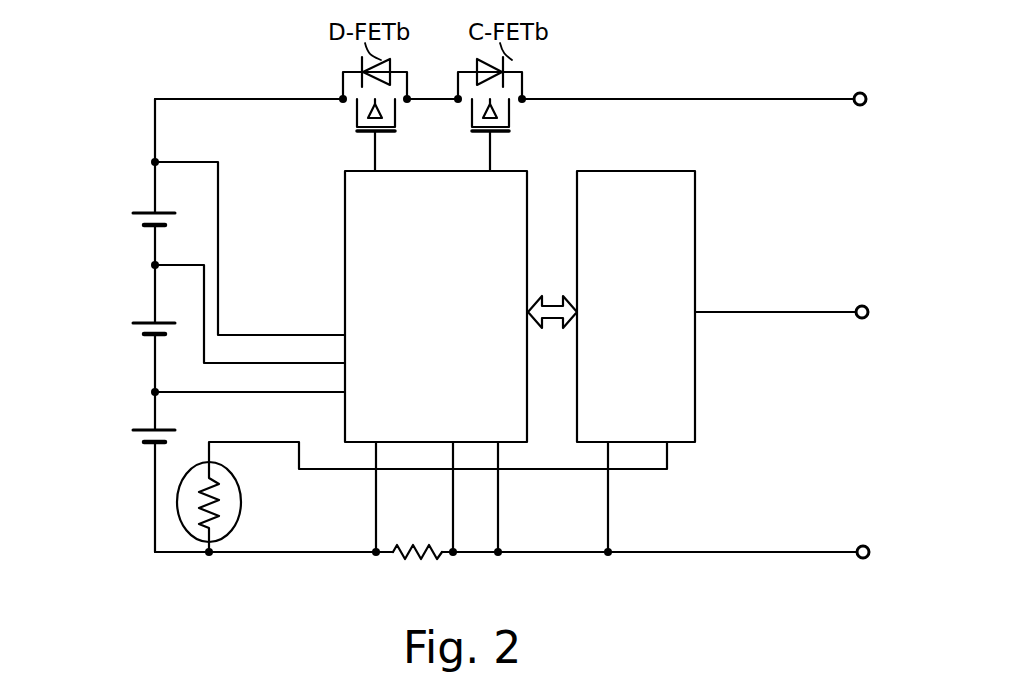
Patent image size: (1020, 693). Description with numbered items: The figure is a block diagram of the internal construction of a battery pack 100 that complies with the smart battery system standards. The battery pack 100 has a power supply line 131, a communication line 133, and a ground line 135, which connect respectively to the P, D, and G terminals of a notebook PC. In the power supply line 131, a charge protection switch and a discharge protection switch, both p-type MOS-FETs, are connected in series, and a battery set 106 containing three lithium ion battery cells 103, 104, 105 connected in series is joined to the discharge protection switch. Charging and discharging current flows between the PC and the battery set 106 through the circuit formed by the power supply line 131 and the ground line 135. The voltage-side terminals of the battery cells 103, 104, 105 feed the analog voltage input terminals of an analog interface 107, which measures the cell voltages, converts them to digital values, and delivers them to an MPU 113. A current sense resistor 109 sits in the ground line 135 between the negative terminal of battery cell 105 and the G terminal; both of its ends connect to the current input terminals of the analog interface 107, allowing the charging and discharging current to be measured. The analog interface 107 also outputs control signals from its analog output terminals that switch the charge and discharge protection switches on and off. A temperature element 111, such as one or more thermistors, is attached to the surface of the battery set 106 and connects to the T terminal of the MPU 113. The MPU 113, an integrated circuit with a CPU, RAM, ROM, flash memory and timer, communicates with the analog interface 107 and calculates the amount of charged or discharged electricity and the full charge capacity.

The battery pack 100 is at (126, 88).
The battery cell 103 is at (148, 212).
The battery cell 104 is at (148, 322).
The battery cell 105 is at (148, 429).
The battery set 106 is at (100, 165).
The analog interface 107 is at (522, 170).
The current sense resistor 109 is at (408, 555).
The temperature element 111 is at (242, 503).
The MPU 113 is at (680, 170).
The power supply line 131 is at (758, 98).
The communication line 133 is at (760, 312).
The ground line 135 is at (760, 551).